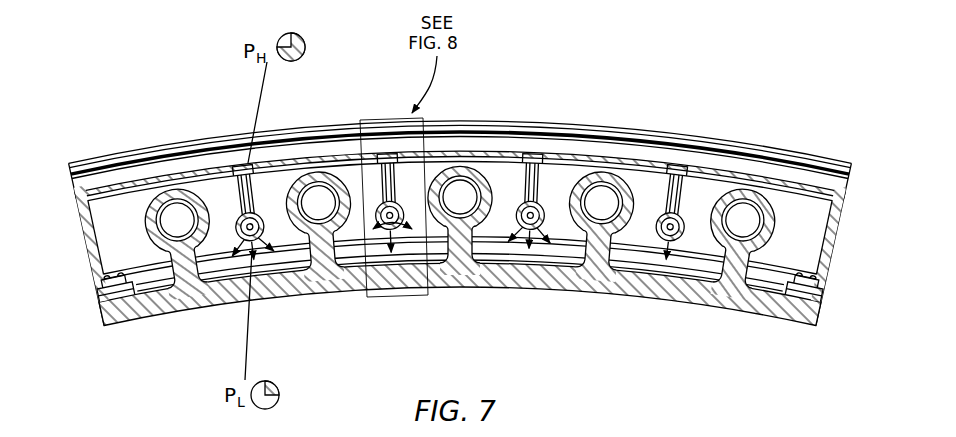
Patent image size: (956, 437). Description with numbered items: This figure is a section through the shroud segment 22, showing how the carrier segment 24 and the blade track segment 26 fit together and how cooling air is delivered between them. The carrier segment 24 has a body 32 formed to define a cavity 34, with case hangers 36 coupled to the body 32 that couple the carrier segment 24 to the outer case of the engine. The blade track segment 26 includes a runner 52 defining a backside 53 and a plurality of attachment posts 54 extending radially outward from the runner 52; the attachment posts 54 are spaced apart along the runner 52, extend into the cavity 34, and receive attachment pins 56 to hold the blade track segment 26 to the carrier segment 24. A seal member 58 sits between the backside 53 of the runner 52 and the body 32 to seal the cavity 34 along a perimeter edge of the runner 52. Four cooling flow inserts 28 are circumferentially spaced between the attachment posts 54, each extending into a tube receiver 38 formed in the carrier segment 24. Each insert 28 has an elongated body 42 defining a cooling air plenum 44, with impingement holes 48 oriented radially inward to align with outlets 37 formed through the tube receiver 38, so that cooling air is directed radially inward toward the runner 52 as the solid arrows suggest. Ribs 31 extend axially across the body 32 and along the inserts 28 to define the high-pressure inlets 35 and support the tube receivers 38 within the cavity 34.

The shroud segment 22 is at (751, 74).
The carrier segment 24 is at (637, 128).
The blade track segment 26 is at (726, 302).
The cooling flow insert 28 is at (230, 207).
The rib 31 is at (263, 188).
The body 32 is at (73, 217).
The cavity 34 is at (423, 190).
The high-pressure inlet 35 is at (241, 214).
The case hanger 36 is at (688, 136).
The outlet 37 is at (420, 231).
The tube receiver 38 is at (268, 242).
The elongated body 42 is at (273, 207).
The cooling air plenum 44 is at (242, 240).
The impingement hole 48 is at (386, 236).
The runner 52 is at (355, 284).
The backside 53 is at (492, 253).
The attachment post 54 is at (188, 290).
The attachment pin 56 is at (177, 190).
The seal member 58 is at (100, 298).